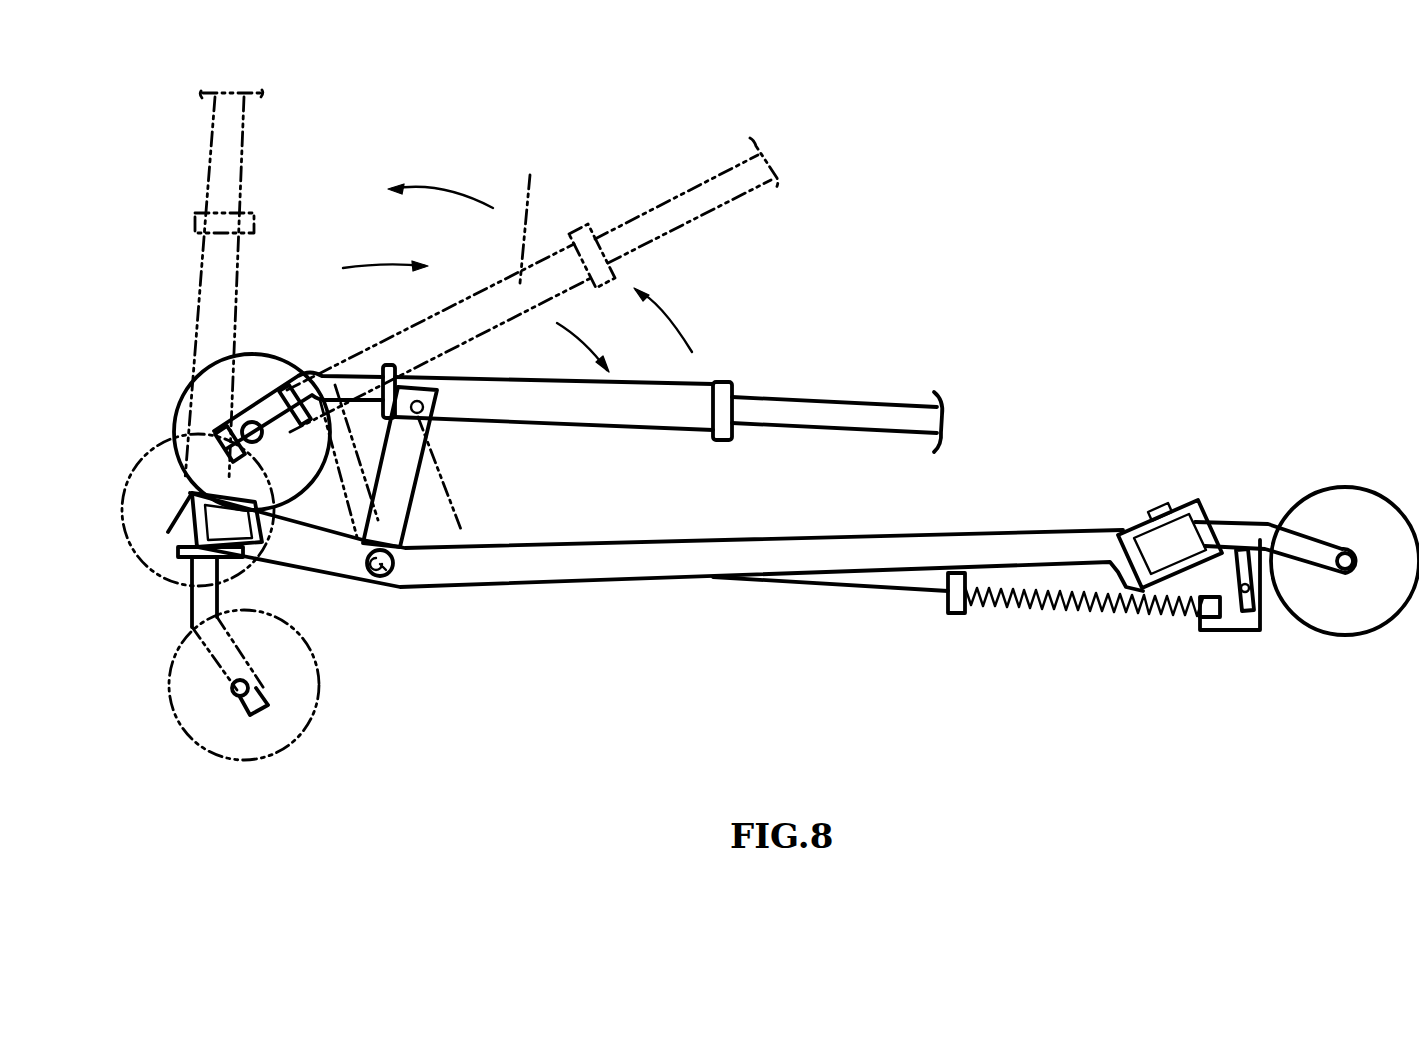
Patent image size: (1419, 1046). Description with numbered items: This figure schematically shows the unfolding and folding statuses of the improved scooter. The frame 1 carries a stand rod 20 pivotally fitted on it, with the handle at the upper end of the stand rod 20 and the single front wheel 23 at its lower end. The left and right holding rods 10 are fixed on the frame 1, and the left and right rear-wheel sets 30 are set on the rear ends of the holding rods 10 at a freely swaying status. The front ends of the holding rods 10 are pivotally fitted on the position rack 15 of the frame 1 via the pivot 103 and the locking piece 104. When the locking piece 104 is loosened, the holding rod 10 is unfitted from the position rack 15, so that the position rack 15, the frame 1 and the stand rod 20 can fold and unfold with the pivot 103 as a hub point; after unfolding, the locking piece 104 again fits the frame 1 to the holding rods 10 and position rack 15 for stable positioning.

The frame 1 is at (198, 318).
The holding rod 10 is at (705, 563).
The position rack 15 is at (350, 482).
The stand rod 20 is at (227, 168).
The front wheel 23 is at (165, 465).
The rear-wheel set 30 is at (1224, 480).
The pivot 103 is at (402, 583).
The locking piece 104 is at (243, 537).